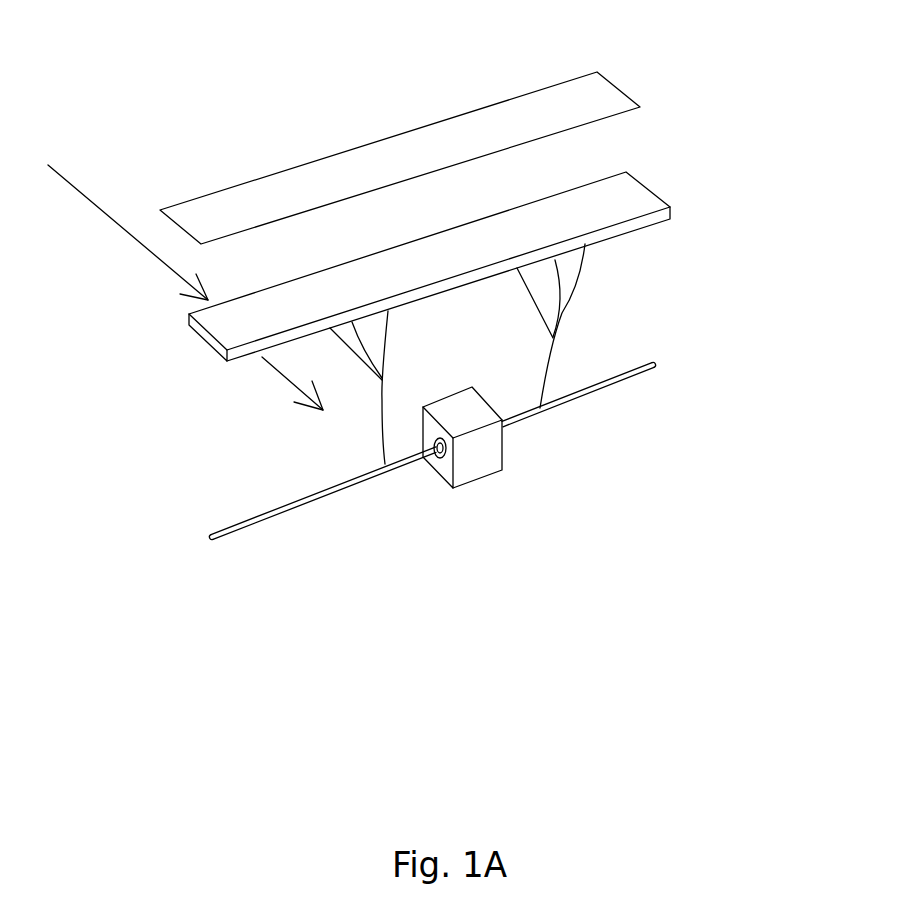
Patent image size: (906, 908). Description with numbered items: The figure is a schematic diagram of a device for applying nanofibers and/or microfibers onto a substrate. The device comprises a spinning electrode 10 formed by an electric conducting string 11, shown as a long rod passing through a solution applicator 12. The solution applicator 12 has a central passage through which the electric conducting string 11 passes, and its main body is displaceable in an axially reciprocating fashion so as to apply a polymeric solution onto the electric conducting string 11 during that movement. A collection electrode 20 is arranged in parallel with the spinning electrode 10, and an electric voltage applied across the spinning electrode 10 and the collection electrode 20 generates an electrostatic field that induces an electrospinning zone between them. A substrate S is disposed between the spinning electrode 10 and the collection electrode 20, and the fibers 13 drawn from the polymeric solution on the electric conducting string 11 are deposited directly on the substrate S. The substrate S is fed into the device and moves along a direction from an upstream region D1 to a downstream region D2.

The spinning electrode 10 is at (492, 434).
The electric conducting string 11 is at (628, 367).
The solution applicator 12 is at (472, 465).
The fibers 13 is at (568, 327).
The collection electrode 20 is at (593, 107).
The substrate S is at (215, 332).
The upstream region D1 is at (128, 232).
The downstream region D2 is at (280, 388).